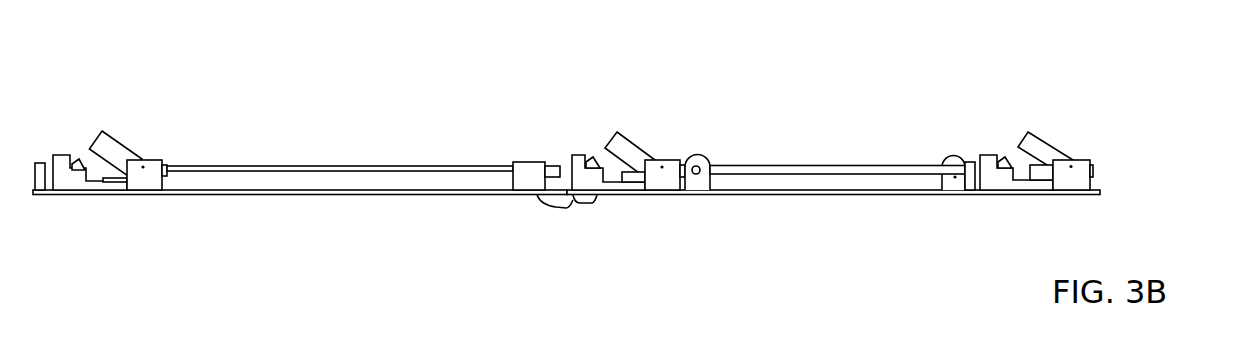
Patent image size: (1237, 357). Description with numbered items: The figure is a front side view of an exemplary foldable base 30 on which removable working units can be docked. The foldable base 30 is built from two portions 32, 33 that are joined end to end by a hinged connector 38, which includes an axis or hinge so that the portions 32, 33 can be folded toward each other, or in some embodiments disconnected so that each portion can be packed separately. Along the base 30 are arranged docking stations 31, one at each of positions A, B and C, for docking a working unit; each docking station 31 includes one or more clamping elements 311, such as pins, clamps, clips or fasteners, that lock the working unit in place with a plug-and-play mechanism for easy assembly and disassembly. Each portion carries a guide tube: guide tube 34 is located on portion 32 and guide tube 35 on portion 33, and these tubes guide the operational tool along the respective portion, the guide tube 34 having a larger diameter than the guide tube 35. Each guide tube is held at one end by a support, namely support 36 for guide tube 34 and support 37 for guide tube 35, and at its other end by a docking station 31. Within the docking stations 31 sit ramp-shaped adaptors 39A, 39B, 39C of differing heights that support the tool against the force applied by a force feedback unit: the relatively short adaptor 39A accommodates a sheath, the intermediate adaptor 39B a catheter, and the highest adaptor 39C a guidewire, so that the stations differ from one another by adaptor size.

The foldable base 30 is at (472, 72).
The docking station 31 is at (74, 190).
The clamping element 311 is at (79, 160).
The base portion 32 is at (786, 196).
The base portion 33 is at (358, 196).
The guide tube 34 is at (785, 165).
The guide tube 35 is at (353, 166).
The support 36 is at (968, 162).
The support 37 is at (518, 162).
The hinged connector 38 is at (566, 209).
The adaptor 39A is at (1043, 181).
The adaptor 39B is at (635, 183).
The adaptor 39C is at (118, 183).